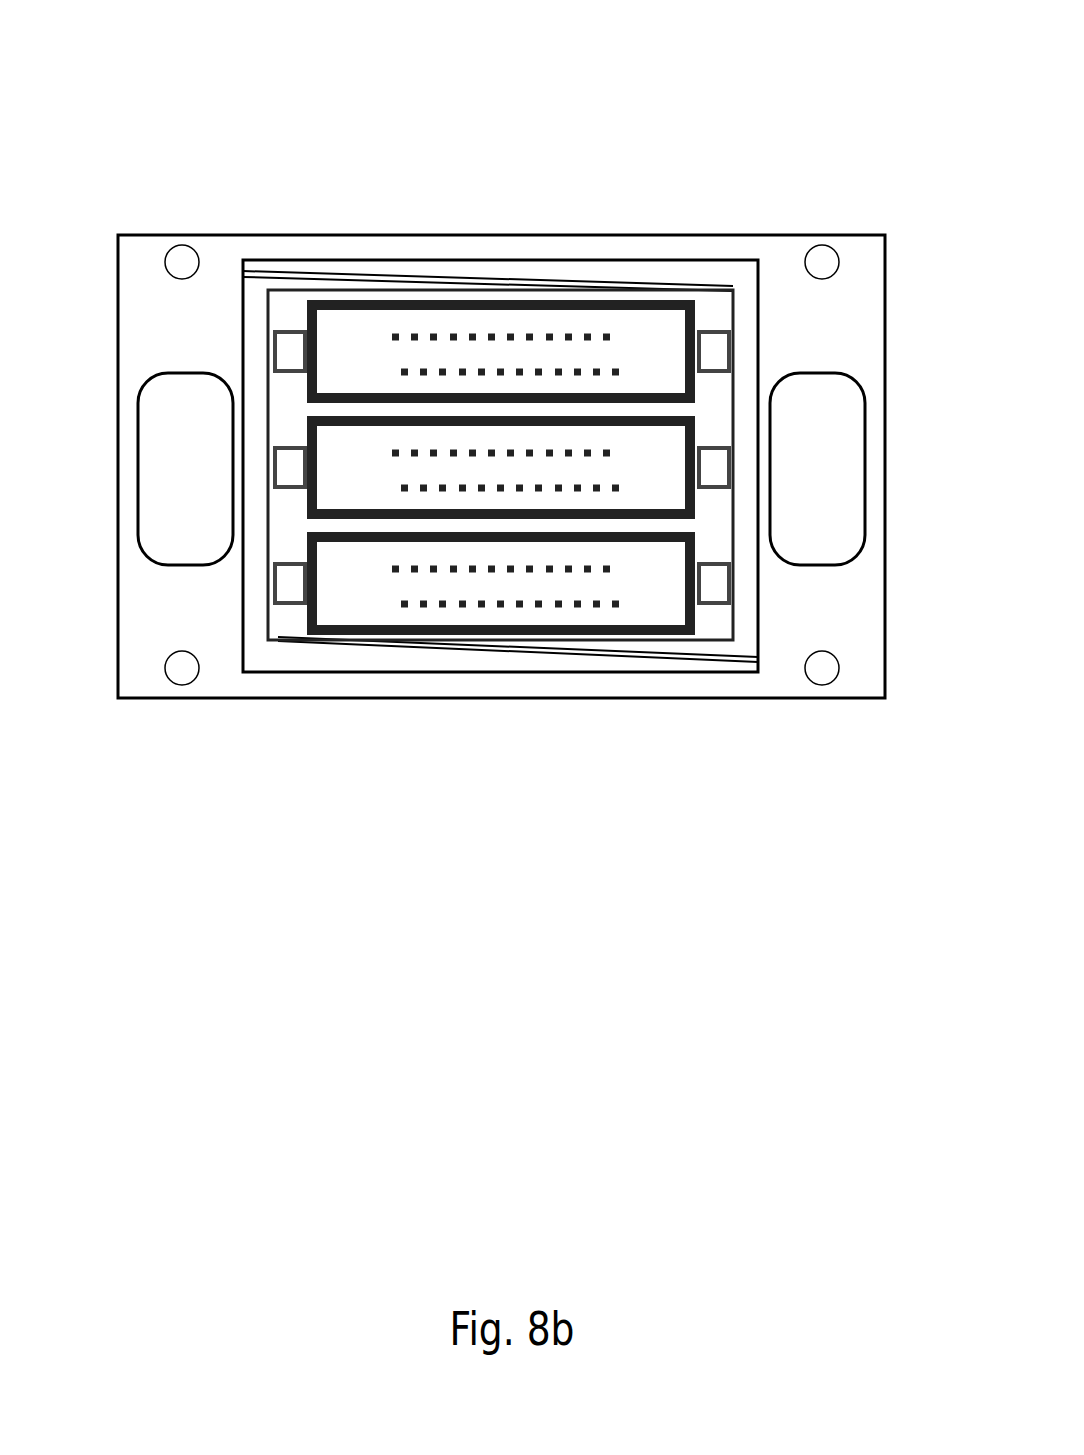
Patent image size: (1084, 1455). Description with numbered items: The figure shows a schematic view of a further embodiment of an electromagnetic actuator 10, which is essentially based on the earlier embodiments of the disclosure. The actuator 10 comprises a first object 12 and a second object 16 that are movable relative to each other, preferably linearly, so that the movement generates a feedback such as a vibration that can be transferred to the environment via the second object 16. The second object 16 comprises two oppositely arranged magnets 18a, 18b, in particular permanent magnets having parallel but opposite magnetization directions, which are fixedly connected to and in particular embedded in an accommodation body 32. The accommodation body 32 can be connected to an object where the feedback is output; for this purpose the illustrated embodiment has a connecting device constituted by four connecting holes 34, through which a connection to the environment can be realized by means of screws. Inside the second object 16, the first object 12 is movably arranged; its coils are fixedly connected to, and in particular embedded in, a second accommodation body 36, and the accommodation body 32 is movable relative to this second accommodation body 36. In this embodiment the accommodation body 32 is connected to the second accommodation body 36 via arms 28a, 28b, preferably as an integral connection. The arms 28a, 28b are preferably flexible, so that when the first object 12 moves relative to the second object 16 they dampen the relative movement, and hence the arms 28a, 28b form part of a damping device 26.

The electromagnetic actuator 10 is at (125, 113).
The first object 12 is at (712, 308).
The second object 16 is at (835, 165).
The magnet 18a is at (152, 433).
The magnet 18b is at (850, 433).
The damping device 26 is at (520, 210).
The arm 28a is at (585, 283).
The arm 28b is at (460, 648).
The accommodation body 32 is at (835, 320).
The connecting hole 34 is at (181, 262).
The second accommodation body 36 is at (715, 630).